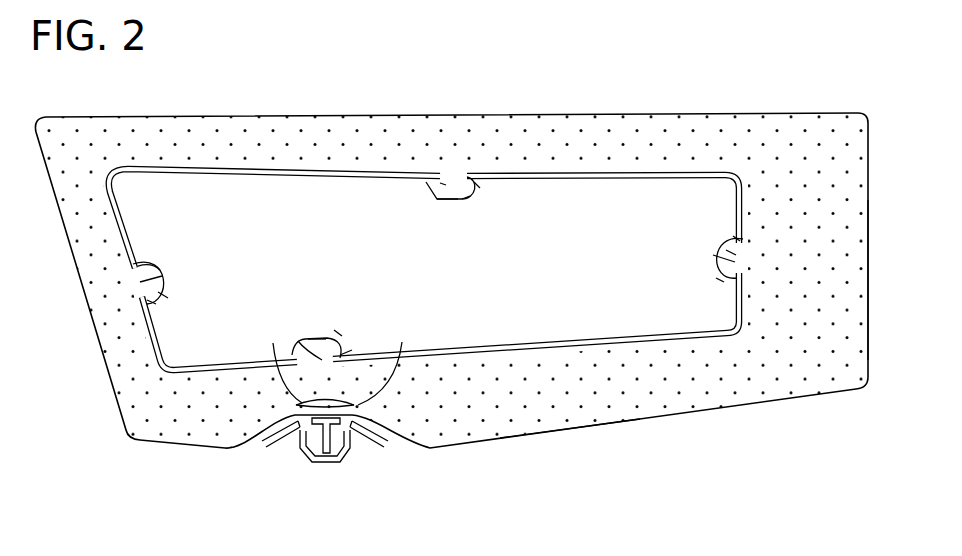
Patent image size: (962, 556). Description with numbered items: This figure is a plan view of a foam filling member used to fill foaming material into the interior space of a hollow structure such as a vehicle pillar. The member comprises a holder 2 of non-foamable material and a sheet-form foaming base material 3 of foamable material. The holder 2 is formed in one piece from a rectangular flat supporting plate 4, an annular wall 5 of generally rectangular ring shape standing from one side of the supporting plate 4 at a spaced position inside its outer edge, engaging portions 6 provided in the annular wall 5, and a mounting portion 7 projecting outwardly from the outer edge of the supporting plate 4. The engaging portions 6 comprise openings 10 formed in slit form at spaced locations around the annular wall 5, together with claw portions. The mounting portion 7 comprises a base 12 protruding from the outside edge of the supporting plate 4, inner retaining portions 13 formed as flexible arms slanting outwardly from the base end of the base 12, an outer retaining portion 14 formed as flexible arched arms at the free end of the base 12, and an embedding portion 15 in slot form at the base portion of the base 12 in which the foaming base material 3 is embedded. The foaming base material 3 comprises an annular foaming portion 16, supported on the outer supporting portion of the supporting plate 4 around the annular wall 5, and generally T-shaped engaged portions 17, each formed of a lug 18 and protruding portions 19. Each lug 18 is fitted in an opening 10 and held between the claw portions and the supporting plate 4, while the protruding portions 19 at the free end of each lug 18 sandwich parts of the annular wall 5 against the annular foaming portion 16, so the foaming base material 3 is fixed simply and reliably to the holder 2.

The holder 2 is at (648, 419).
The foaming base material 3 is at (714, 389).
The supporting plate 4 is at (863, 283).
The annular wall 5 is at (240, 360).
The engaging portions 6 is at (142, 254).
The mounting portion 7 is at (298, 470).
The openings 10 is at (135, 282).
The base 12 is at (329, 361).
The inner retaining portions 13 is at (275, 447).
The outer retaining portion 14 is at (330, 463).
The embedding portion 15 is at (400, 345).
The annular foaming portion 16 is at (548, 412).
The engaged portions 17 is at (172, 296).
The lug 18 is at (150, 262).
The protruding portions 19 is at (156, 303).